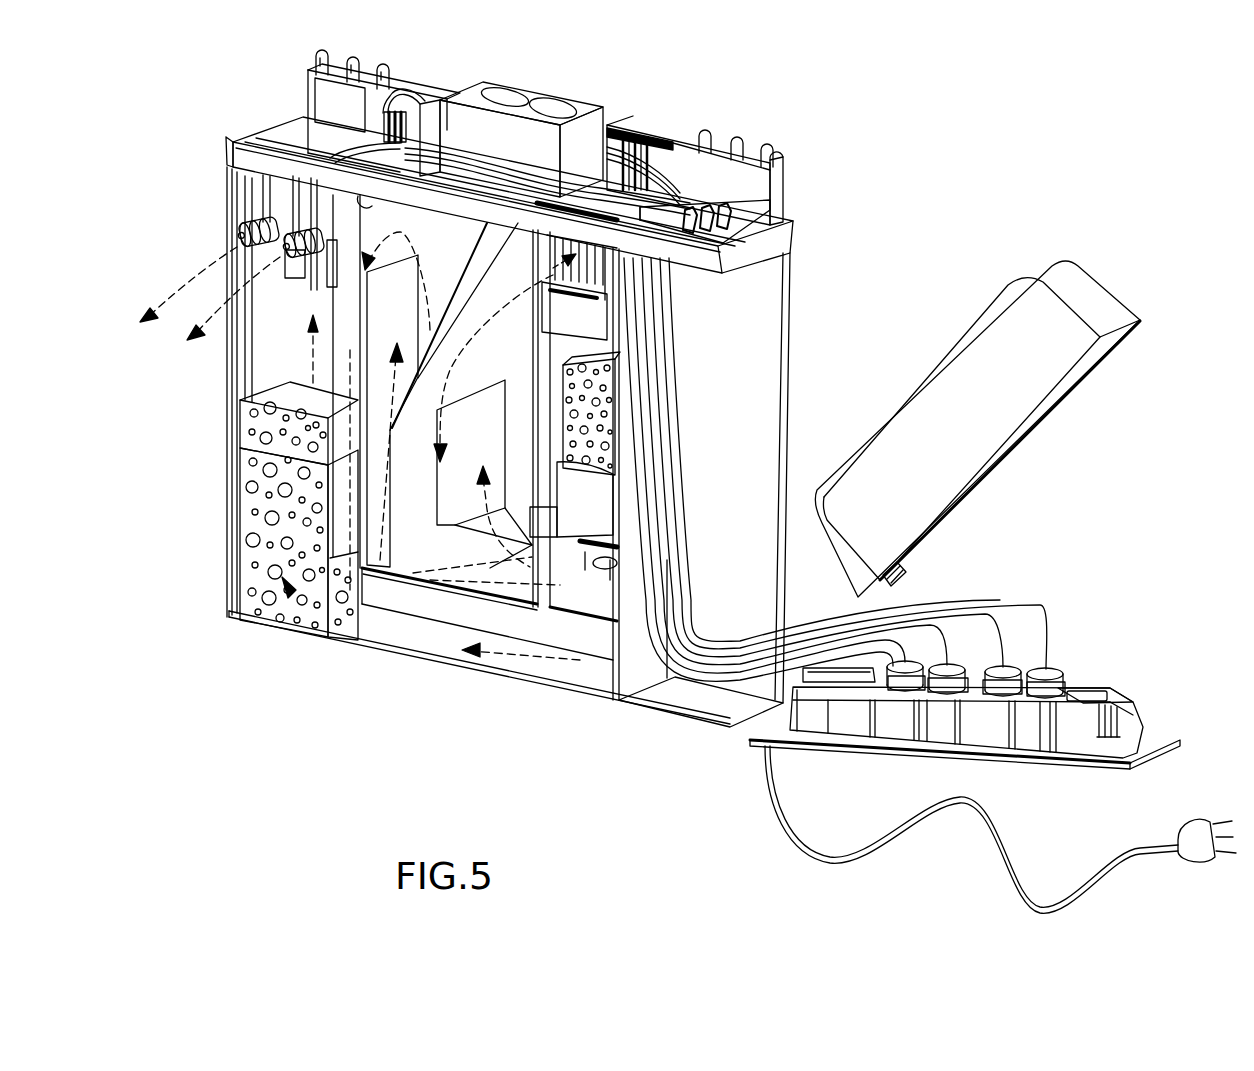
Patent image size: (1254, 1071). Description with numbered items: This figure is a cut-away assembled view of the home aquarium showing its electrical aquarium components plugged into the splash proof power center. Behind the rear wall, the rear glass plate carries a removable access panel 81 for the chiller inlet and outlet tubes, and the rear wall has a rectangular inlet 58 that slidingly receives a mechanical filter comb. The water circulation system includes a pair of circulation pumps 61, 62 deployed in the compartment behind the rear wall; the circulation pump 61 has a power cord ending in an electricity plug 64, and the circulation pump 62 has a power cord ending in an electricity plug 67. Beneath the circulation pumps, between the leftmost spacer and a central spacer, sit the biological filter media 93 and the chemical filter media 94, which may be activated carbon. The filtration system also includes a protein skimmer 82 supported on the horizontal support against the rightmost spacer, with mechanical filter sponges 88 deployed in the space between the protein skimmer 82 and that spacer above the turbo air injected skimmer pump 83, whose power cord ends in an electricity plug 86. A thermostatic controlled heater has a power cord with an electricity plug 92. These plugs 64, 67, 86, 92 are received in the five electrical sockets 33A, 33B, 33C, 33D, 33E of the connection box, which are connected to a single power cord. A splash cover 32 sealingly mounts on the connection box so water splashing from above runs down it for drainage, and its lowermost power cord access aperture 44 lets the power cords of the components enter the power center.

The removable access panel 81 is at (428, 120).
The rectangular inlet 58 is at (607, 135).
The circulation pump 62 is at (317, 212).
The circulation pump 61 is at (273, 205).
The chemical filter media 94 is at (255, 424).
The biological filter media 93 is at (250, 512).
The mechanical filter sponges 88 is at (600, 402).
The splash cover 32 is at (993, 363).
The power cord access aperture 44 is at (877, 587).
The electricity plug 64 is at (906, 662).
The electricity plug 67 is at (948, 665).
The electricity plug 92 is at (1004, 668).
The electricity plug 86 is at (1046, 670).
The electrical socket 33E is at (895, 707).
The electrical socket 33D is at (943, 713).
The electrical socket 33C is at (992, 717).
The electrical socket 33B is at (1033, 720).
The electrical socket 33A is at (1077, 720).
The protein skimmer 82 is at (445, 518).
The turbo air injected skimmer pump 83 is at (578, 507).